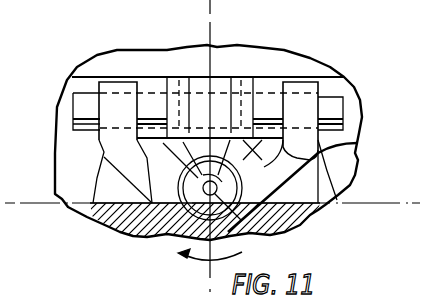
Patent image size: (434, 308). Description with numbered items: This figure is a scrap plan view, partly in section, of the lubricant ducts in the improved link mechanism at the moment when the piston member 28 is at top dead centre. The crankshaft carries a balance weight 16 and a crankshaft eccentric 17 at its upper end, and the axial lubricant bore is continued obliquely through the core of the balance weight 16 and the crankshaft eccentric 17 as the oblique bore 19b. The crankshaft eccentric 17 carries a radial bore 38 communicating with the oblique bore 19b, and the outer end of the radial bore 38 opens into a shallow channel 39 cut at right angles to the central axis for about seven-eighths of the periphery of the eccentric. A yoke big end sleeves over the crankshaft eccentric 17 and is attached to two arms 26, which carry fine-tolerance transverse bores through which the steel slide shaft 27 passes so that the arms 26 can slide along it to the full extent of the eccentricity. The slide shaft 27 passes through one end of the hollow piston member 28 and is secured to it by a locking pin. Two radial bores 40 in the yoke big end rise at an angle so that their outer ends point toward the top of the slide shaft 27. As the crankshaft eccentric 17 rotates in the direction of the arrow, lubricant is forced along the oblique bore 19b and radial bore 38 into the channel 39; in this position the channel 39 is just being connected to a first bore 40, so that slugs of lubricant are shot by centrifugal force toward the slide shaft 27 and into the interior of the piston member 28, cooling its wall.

The balance weight 16 is at (114, 226).
The crankshaft eccentric 17 is at (313, 210).
The oblique bore 19b is at (236, 233).
The arms 26 is at (240, 183).
The slide shaft 27 is at (335, 110).
The piston member 28 is at (227, 88).
The radial bore 38 is at (197, 173).
The shallow channel 39 is at (197, 182).
The radial bores 40 is at (227, 137).